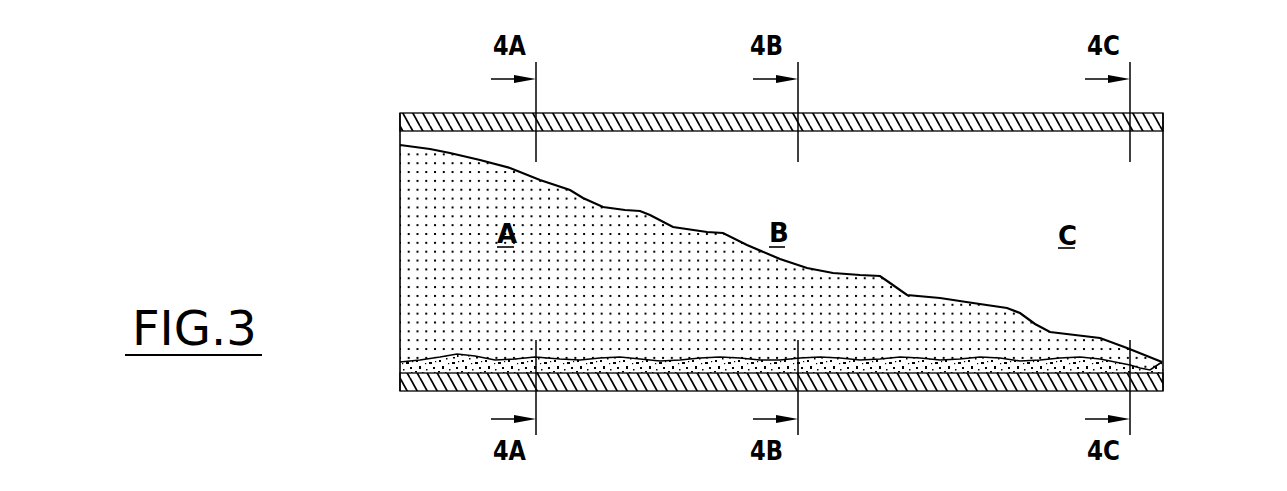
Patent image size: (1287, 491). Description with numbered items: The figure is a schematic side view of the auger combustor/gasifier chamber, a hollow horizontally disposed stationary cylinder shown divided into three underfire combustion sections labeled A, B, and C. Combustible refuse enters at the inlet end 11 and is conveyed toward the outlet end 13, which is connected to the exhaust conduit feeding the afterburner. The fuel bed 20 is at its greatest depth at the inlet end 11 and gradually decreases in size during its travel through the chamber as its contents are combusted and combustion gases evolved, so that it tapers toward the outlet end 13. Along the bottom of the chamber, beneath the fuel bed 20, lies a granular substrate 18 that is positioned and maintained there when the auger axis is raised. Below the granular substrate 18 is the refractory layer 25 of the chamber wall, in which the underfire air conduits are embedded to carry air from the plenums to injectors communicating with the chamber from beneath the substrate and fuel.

The inlet end 11 is at (400, 180).
The outlet end 13 is at (1163, 230).
The granular substrate 18 is at (458, 362).
The fuel bed 20 is at (440, 219).
The refractory layer 25 is at (990, 391).